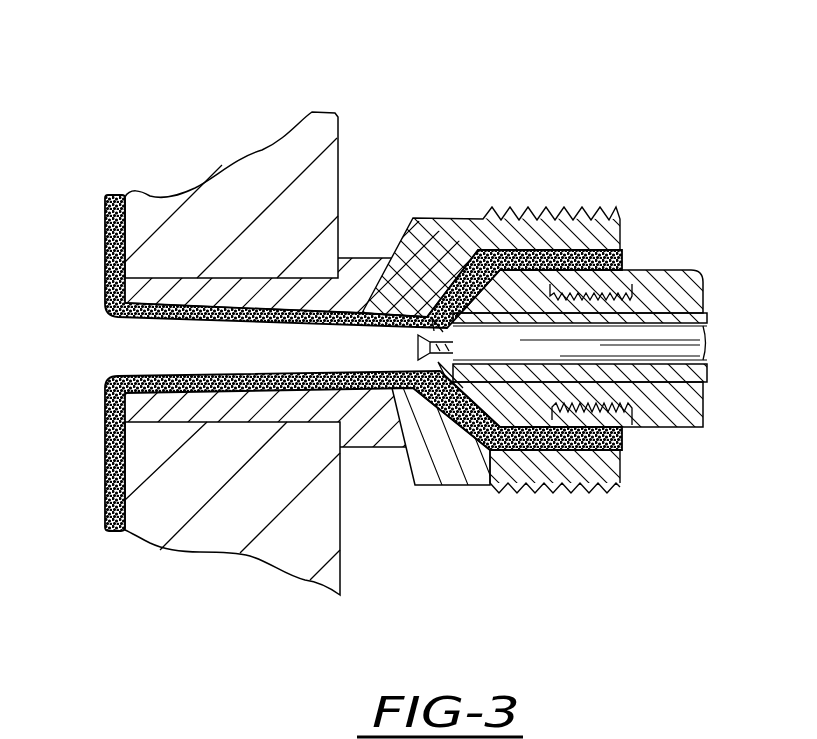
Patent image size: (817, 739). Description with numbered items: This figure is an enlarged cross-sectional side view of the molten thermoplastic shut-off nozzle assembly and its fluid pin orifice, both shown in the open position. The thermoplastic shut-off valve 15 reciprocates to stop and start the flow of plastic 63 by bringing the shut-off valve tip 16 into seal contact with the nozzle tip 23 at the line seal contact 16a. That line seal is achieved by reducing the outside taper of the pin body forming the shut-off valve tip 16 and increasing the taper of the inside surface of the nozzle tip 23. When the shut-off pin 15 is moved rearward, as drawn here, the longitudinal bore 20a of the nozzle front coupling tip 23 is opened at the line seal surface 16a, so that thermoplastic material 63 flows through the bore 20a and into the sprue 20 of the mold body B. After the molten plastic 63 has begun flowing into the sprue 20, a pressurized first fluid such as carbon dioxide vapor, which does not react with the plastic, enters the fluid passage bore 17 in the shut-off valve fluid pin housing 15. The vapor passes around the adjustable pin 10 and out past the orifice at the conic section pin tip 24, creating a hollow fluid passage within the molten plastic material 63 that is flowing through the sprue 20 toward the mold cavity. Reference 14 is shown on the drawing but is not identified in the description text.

The mold body B is at (318, 112).
The adjustable pin 10 is at (660, 333).
The upper nut 14 is at (693, 313).
The thermoplastic shut-off valve 15 is at (583, 406).
The shut-off valve tip 16 is at (500, 405).
The line seal contact 16a is at (410, 390).
The fluid passage bore 17 is at (678, 365).
The sprue 20 is at (197, 346).
The longitudinal bore 20a is at (438, 330).
The nozzle tip 23 is at (398, 425).
The conic section pin tip 24 is at (432, 338).
The molten thermoplastic material 63 is at (110, 252).